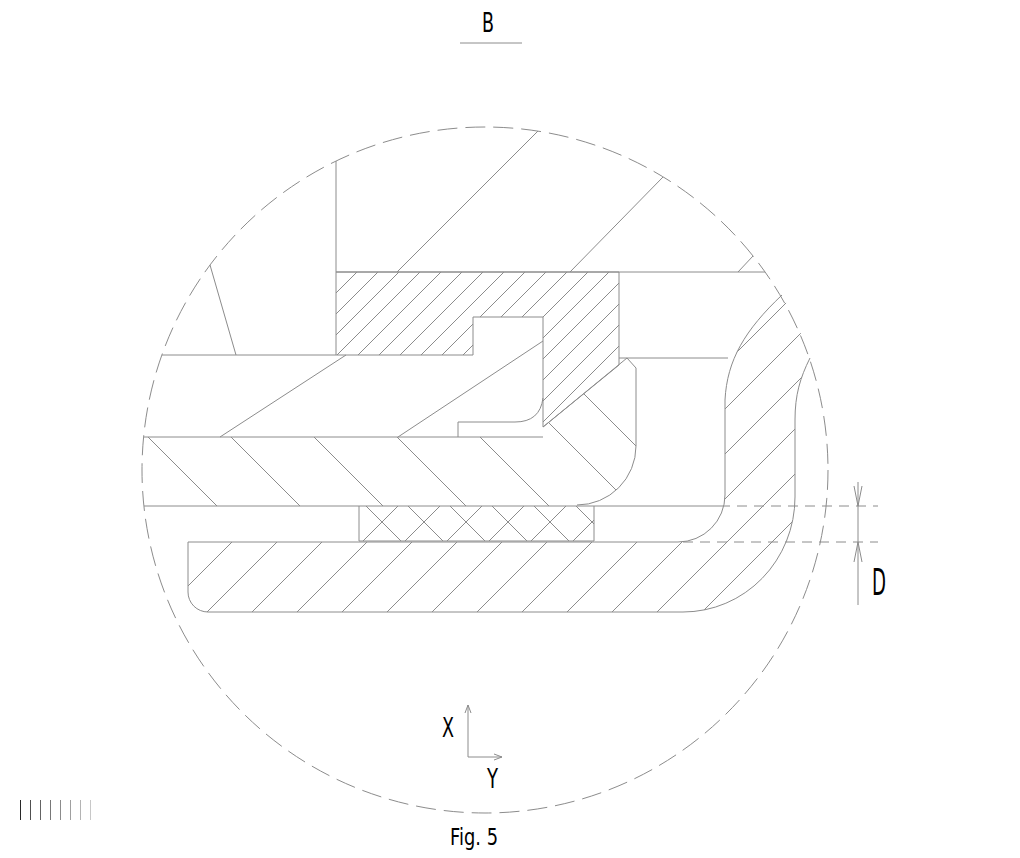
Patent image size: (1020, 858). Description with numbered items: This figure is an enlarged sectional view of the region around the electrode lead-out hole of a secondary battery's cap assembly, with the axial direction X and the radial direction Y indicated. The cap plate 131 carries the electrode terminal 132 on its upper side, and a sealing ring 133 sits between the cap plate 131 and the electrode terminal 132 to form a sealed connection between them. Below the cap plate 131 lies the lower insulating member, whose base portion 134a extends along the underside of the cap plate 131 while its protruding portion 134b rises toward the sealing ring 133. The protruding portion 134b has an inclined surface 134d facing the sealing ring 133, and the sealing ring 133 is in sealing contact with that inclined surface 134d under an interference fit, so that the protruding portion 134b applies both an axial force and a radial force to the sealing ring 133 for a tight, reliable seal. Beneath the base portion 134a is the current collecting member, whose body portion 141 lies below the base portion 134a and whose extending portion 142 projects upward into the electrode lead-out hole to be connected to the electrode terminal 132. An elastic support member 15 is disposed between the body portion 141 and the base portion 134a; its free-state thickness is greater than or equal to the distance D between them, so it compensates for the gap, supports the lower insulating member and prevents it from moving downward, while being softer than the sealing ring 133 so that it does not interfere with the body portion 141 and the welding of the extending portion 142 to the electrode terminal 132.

The support member 15 is at (370, 521).
The cap plate 131 is at (205, 400).
The electrode terminal 132 is at (397, 215).
The sealing ring 133 is at (400, 322).
The base portion 134a is at (213, 472).
The protruding portion 134b is at (612, 450).
The inclined surface 134d is at (578, 402).
The body portion 141 is at (250, 595).
The extending portion 142 is at (760, 440).